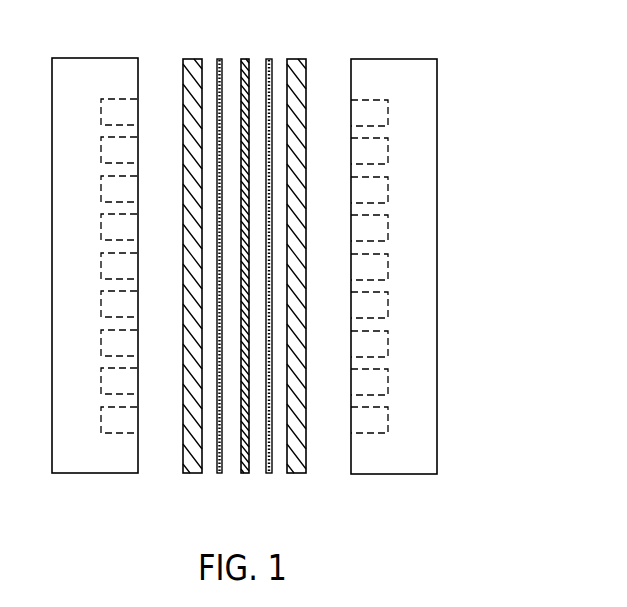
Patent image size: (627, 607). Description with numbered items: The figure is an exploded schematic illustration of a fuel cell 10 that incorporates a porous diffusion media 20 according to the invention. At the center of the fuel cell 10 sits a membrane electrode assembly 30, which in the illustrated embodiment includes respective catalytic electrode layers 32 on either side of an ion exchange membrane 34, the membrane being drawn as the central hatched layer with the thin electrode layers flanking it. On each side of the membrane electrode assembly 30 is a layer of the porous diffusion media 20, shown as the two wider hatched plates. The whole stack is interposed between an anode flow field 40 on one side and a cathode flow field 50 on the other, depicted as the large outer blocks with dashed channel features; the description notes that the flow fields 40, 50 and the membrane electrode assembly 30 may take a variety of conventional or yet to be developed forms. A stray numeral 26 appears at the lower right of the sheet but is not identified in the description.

The fuel cell 10 is at (503, 124).
The porous diffusion media 20 is at (193, 58).
The unlabeled element 26 is at (558, 593).
The membrane electrode assembly 30 is at (245, 264).
The catalytic electrode layers 32 is at (220, 474).
The ion exchange membrane 34 is at (245, 474).
The anode flow field 40 is at (98, 58).
The cathode flow field 50 is at (395, 59).